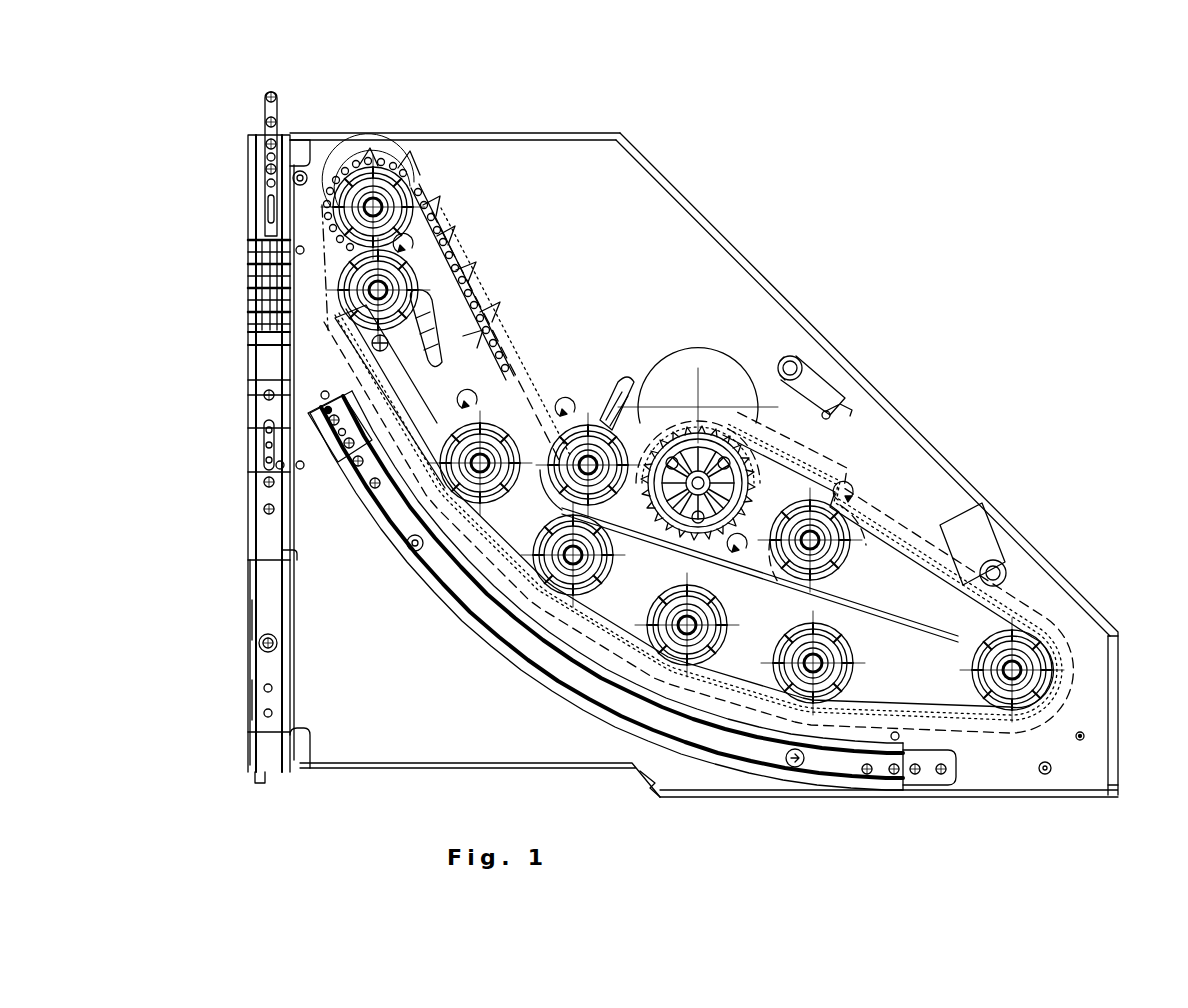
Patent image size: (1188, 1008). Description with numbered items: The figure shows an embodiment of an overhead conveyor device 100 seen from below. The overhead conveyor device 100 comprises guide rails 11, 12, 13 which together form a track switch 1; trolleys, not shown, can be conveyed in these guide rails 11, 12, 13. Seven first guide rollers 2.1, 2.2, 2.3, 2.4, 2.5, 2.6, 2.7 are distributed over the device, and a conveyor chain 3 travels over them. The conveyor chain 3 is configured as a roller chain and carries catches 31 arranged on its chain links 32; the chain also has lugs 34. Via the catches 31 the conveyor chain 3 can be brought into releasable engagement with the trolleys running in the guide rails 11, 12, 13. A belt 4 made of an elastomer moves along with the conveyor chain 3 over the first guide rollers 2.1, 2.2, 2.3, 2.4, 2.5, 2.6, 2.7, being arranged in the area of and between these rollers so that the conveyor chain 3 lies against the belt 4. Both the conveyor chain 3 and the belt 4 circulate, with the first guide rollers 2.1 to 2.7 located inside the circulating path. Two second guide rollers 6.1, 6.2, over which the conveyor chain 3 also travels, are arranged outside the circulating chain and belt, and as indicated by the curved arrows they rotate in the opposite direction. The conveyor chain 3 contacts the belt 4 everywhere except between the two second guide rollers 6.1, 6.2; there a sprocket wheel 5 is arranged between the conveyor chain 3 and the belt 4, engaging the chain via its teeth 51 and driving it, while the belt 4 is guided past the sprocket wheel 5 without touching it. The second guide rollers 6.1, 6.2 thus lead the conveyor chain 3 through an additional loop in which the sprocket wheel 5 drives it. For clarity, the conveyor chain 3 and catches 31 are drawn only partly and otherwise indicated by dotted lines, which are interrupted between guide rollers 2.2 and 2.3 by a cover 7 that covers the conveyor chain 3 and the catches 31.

The track switch 1 is at (212, 266).
The overhead conveyor device 100 is at (878, 264).
The first guide roller 2.1 is at (418, 190).
The first guide roller 2.2 is at (416, 272).
The first guide roller 2.3 is at (440, 483).
The first guide roller 2.4 is at (545, 575).
The first guide roller 2.5 is at (648, 628).
The first guide roller 2.6 is at (850, 648).
The first guide roller 2.7 is at (1045, 650).
The conveyor chain 3 is at (500, 327).
The catches 31 is at (402, 162).
The chain links 32 is at (463, 265).
The lugs 34 is at (492, 344).
The belt 4 is at (512, 415).
The sprocket wheel 5 is at (750, 478).
The teeth 51 is at (755, 500).
The second guide roller 6.1 is at (833, 514).
The second guide roller 6.2 is at (580, 423).
The cover 7 is at (380, 365).
The guide rail 11 is at (522, 656).
The guide rail 12 is at (266, 647).
The guide rail 13 is at (266, 231).